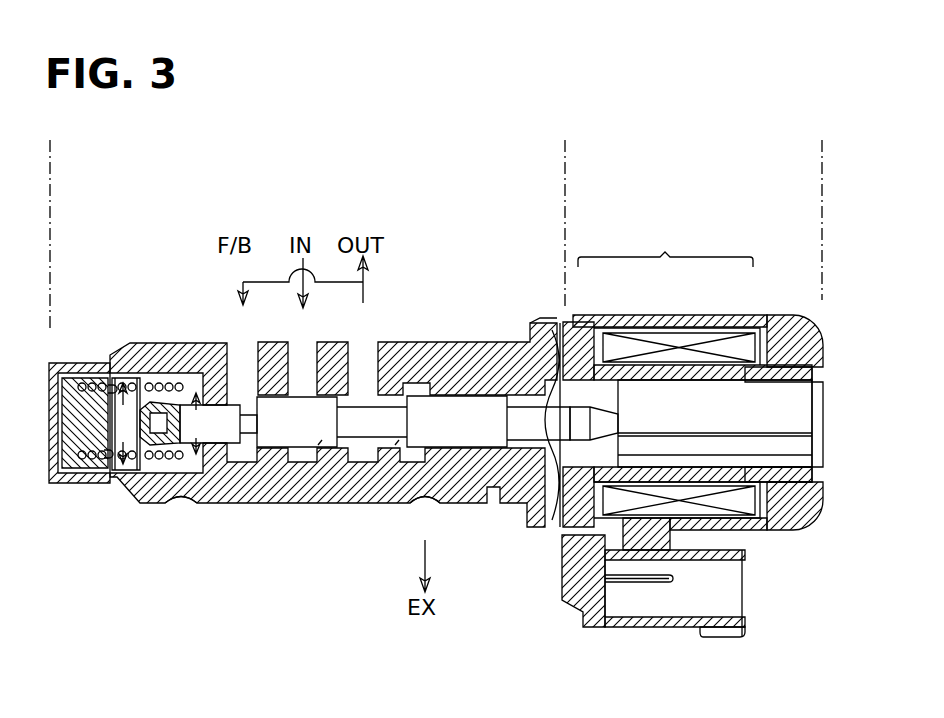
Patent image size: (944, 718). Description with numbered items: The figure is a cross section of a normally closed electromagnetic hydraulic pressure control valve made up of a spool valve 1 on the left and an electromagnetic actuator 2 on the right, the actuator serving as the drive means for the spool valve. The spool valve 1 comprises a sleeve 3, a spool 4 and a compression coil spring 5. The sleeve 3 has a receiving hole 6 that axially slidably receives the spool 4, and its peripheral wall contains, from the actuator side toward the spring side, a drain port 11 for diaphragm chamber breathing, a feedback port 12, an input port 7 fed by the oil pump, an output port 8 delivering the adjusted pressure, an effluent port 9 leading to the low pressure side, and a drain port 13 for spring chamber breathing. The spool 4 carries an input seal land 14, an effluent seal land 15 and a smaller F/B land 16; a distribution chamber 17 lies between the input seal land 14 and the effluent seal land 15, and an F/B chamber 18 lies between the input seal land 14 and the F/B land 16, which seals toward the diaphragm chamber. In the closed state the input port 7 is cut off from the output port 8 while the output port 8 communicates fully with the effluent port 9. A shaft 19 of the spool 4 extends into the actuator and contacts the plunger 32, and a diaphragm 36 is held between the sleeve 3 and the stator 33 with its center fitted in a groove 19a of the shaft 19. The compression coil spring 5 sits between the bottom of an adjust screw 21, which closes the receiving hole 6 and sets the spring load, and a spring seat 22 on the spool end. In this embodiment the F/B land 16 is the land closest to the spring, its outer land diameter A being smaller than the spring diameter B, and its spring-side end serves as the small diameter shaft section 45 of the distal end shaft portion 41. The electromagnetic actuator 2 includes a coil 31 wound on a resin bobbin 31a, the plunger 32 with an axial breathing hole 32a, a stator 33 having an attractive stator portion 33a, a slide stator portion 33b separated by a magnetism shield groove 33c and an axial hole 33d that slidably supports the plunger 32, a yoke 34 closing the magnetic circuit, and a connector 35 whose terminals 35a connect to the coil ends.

The spool valve 1 is at (563, 153).
The electromagnetic actuator 2 is at (820, 155).
The sleeve 3 is at (450, 345).
The spool 4 is at (352, 447).
The compression coil spring 5 is at (100, 462).
The receiving hole 6 is at (200, 345).
The input port 7 is at (306, 345).
The output port 8 is at (363, 347).
The effluent port 9 is at (423, 500).
The drain port 11 is at (530, 497).
The feedback (F/B) port 12 is at (255, 348).
The drain port 13 is at (182, 500).
The input seal land 14 is at (270, 440).
The effluent seal land 15 is at (462, 445).
The F/B land 16 is at (222, 446).
The distribution chamber 17 is at (390, 347).
The F/B chamber 18 is at (222, 405).
The shaft 19 is at (530, 413).
The groove 19a is at (548, 330).
The adjust screw 21 is at (86, 368).
The spring seat 22 is at (150, 400).
The coil 31 is at (737, 530).
The resin bobbin 31a is at (780, 531).
The plunger 32 is at (793, 415).
The hole 32a is at (797, 446).
The stator 33 is at (665, 246).
The attractive stator portion 33a is at (588, 330).
The slide stator portion 33b is at (715, 335).
The magnetism shield groove 33c is at (657, 330).
The axial hole 33d is at (780, 383).
The yoke 34 is at (780, 330).
The connector 35 is at (723, 643).
The terminals 35a is at (650, 584).
The diaphragm 36 is at (546, 515).
The distal end shaft portion 41 is at (180, 400).
The small diameter shaft section 45 is at (165, 462).
The outer land diameter A is at (204, 423).
The spring diameter B is at (122, 423).